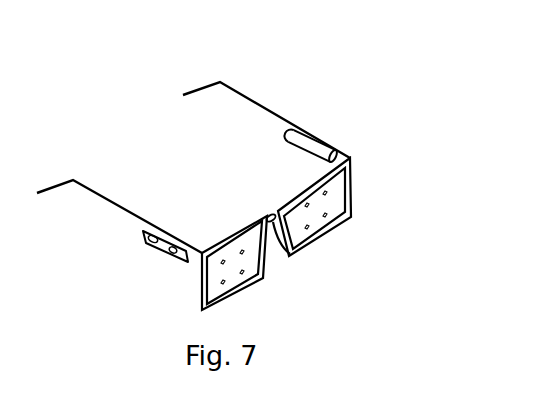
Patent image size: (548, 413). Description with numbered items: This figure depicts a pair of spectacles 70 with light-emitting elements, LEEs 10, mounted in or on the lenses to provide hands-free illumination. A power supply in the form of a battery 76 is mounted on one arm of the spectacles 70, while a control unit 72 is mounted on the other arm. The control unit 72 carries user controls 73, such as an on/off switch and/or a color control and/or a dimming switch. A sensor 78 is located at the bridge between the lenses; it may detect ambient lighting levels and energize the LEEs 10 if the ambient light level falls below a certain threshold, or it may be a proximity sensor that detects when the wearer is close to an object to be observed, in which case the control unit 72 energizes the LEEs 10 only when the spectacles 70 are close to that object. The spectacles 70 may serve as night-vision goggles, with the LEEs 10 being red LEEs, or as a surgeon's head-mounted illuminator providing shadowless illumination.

The LEEs 10 is at (308, 228).
The spectacles 70 is at (191, 94).
The control unit 72 is at (155, 249).
The user controls 73 is at (173, 256).
The battery 76 is at (305, 133).
The sensor 78 is at (267, 214).